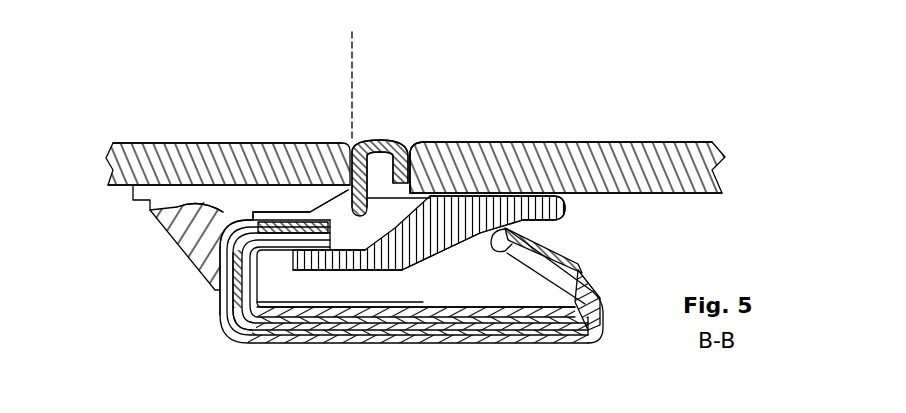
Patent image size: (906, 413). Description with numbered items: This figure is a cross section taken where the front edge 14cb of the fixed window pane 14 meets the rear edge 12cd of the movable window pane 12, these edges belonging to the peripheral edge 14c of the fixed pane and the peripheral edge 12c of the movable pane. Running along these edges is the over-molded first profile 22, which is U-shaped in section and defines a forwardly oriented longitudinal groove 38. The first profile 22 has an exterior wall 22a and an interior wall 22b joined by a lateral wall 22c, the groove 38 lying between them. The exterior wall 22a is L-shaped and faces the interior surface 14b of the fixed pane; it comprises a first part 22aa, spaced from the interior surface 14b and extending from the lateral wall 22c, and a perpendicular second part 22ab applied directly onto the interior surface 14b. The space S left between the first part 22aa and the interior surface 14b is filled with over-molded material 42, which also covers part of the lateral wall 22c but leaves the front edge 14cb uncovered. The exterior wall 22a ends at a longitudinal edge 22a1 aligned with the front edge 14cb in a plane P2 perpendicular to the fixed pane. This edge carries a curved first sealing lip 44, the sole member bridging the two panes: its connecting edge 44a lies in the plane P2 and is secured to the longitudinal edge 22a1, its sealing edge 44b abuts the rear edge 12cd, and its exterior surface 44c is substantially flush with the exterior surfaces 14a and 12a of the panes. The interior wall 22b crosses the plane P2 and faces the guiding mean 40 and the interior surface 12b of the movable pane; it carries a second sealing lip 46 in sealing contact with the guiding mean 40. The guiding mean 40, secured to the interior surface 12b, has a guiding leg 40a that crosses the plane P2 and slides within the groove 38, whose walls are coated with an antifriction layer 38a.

The movable window pane 12 is at (699, 140).
The exterior surface of the movable window pane 12a is at (665, 141).
The interior surface of the movable window pane 12b is at (700, 193).
The peripheral edge of the movable window pane 12c is at (410, 158).
The rear edge of the movable window pane 12cd is at (482, 143).
The fixed window pane 14 is at (113, 141).
The exterior surface of the fixed window pane 14a is at (190, 141).
The interior surface of the fixed window pane 14b is at (137, 141).
The peripheral edge of the fixed window pane 14c is at (352, 141).
The front edge of the fixed window pane 14cb is at (410, 130).
The first profile 22 is at (502, 350).
The exterior wall 22a is at (300, 226).
The first part of the exterior wall 22aa is at (258, 212).
The second part of the exterior wall 22ab is at (312, 210).
The longitudinal edge of the exterior wall 22a1 is at (402, 266).
The interior wall 22b is at (380, 345).
The lateral wall 22c is at (223, 313).
The longitudinal groove 38 is at (283, 284).
The antifriction layer 38a is at (250, 323).
The guiding mean 40 is at (453, 240).
The guiding leg 40a is at (297, 262).
The over-molded material 42 is at (177, 240).
The first sealing lip 44 is at (397, 136).
The longitudinal connecting edge 44a is at (412, 268).
The longitudinal sealing edge 44b is at (408, 200).
The exterior surface of the sealing lip 44c is at (372, 143).
The second sealing lip 46 is at (597, 272).
The plane P2 is at (352, 75).
The space S is at (165, 219).